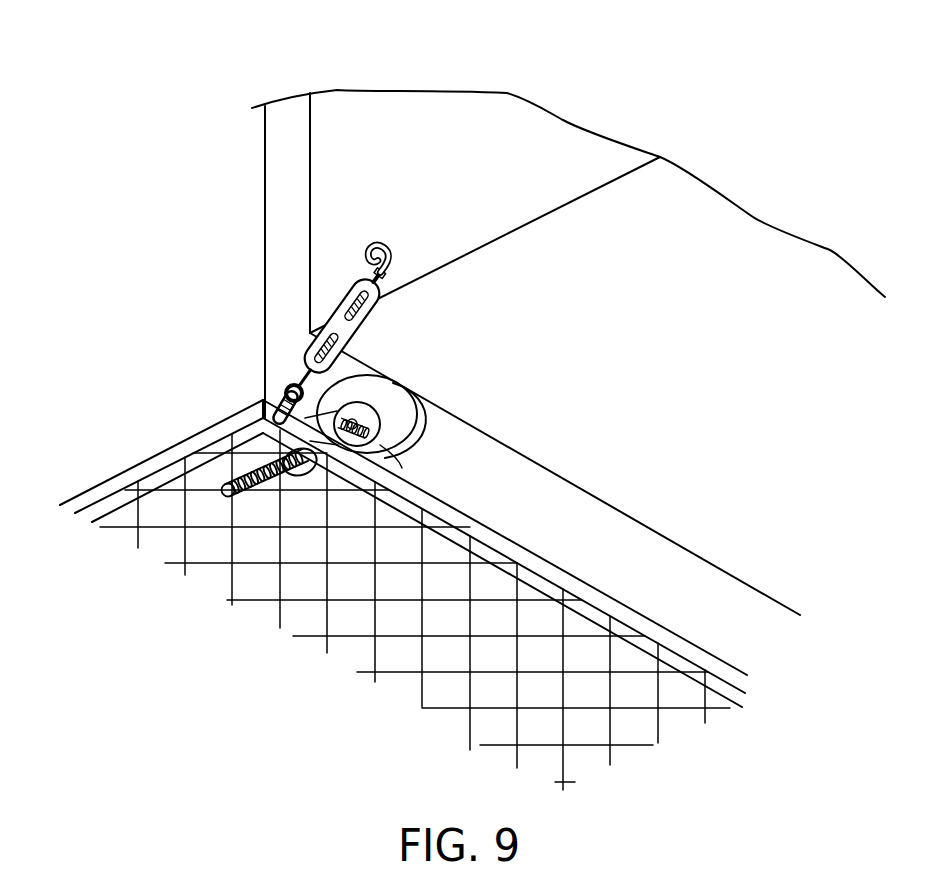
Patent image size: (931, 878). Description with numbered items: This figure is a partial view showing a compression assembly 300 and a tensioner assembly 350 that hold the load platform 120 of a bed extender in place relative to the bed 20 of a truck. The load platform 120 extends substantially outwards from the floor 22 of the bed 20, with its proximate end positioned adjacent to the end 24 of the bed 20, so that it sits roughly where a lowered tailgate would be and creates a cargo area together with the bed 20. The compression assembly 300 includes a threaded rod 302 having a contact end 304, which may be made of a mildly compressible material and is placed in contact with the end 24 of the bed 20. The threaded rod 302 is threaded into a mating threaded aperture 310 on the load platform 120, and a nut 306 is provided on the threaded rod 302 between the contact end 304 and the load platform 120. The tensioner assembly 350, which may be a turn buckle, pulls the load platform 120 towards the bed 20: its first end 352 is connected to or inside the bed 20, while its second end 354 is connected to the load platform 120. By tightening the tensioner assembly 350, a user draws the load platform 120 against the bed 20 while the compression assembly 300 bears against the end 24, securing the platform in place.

The bed 20 is at (557, 170).
The floor 22 is at (695, 310).
The end 24 is at (683, 588).
The load platform 120 is at (146, 463).
The compression assembly 300 is at (220, 413).
The threaded rod 302 is at (264, 472).
The contact end 304 is at (388, 415).
The nut 306 is at (397, 462).
The threaded aperture 310 is at (302, 477).
The tensioner assembly 350 is at (330, 312).
The first end 352 is at (390, 256).
The second end 354 is at (294, 388).